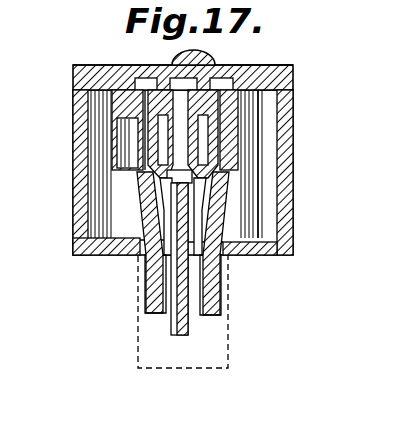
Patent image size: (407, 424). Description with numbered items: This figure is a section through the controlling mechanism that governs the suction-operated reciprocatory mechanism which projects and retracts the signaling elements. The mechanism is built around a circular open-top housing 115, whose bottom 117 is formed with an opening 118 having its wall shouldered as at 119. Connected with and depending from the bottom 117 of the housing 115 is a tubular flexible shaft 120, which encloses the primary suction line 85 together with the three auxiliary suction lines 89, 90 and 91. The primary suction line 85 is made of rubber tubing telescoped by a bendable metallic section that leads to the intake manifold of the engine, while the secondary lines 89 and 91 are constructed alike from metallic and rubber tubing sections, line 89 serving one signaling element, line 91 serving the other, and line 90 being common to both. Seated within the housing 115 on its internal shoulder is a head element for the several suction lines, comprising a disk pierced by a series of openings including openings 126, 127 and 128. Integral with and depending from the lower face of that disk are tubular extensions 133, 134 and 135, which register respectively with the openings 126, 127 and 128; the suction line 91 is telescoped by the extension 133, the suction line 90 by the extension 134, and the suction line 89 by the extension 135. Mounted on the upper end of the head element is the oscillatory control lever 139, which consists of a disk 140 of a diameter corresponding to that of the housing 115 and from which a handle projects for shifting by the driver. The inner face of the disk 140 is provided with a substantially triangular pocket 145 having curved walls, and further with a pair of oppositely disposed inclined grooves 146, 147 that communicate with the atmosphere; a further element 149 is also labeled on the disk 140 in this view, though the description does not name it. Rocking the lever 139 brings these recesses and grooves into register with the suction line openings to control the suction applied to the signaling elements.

The primary suction line 85 is at (188, 332).
The secondary suction line 89 is at (152, 274).
The secondary suction line 90 is at (212, 300).
The secondary suction line 91 is at (227, 188).
The housing 115 is at (293, 218).
The bottom of housing 117 is at (250, 256).
The opening 118 is at (232, 248).
The shoulder 119 is at (134, 245).
The tubular flexible shaft 120 is at (138, 362).
The opening 126 is at (80, 103).
The opening 127 is at (290, 112).
The opening 128 is at (262, 124).
The tubular extension 133 is at (287, 140).
The tubular extension 134 is at (140, 176).
The tubular extension 135 is at (82, 127).
The oscillatory control lever 139 is at (80, 79).
The disk 140 is at (75, 79).
The pocket 145 is at (184, 56).
The inclined groove 146 is at (144, 79).
The inclined groove 147 is at (242, 73).
The opening 149 is at (222, 80).